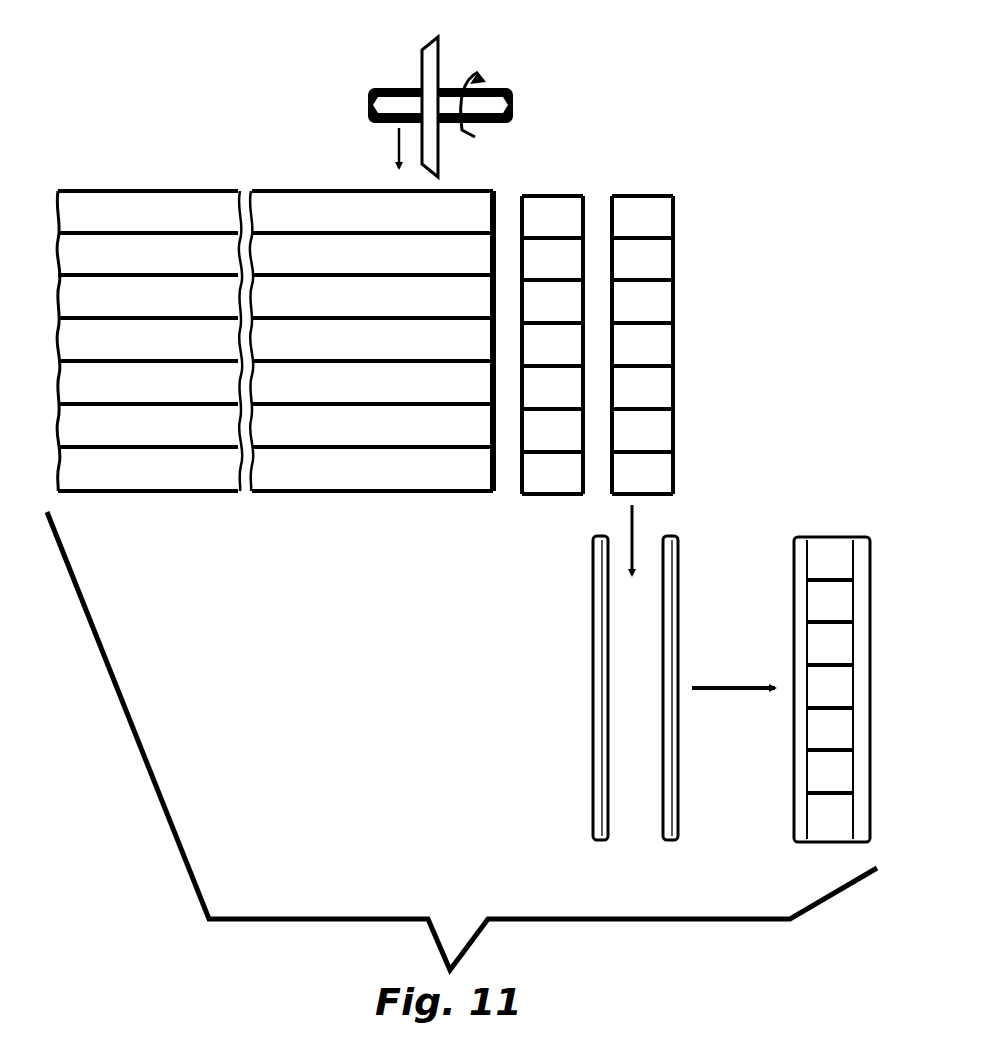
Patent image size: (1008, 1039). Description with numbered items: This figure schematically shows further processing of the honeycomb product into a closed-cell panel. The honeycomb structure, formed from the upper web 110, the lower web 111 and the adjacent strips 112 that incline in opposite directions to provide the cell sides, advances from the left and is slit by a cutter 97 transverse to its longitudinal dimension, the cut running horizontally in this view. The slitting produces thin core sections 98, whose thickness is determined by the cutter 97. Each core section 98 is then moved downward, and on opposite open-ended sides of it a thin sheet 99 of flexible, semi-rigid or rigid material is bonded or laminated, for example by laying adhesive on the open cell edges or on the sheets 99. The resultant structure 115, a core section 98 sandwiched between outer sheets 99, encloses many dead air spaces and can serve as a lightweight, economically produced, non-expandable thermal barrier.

The cutter 97 is at (452, 59).
The thin core section 98 is at (557, 195).
The thin sheet 99 is at (591, 717).
The upper web 110 is at (632, 279).
The lower web 111 is at (640, 325).
The strip 112 is at (160, 306).
The resultant structure 115 is at (857, 528).